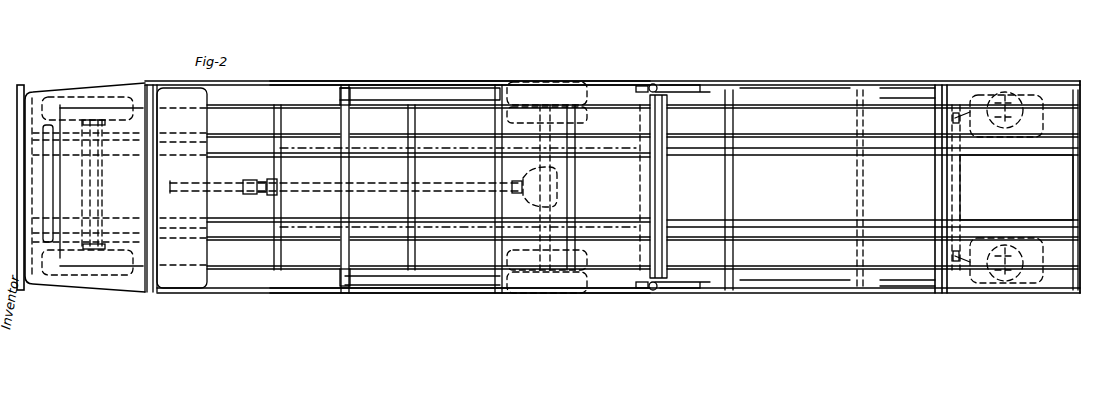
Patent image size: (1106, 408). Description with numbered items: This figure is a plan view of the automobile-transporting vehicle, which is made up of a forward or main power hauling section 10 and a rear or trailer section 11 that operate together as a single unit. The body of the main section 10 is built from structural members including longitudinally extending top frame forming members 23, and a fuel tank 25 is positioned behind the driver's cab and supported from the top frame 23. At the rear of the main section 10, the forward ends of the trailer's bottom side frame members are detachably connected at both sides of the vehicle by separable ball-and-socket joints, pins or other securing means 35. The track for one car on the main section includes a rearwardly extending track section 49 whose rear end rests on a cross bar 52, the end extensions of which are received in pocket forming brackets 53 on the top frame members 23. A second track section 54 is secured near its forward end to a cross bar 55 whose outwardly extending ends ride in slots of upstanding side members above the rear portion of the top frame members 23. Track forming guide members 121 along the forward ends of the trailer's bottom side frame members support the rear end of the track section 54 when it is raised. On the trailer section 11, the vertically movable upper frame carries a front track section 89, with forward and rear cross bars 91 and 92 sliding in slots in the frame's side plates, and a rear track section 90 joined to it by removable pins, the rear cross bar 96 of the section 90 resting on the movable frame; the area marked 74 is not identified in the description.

The main power hauling section 10 is at (140, 74).
The trailer section 11 is at (926, 85).
The top frame forming member 23 is at (331, 85).
The fuel tank 25 is at (175, 278).
The securing means 35 is at (655, 85).
The rear track section 49 is at (285, 115).
The cross bar 52 is at (355, 100).
The pocket forming bracket 53 is at (341, 100).
The track section 54 is at (476, 115).
The cross bar 55 is at (410, 167).
The rear compartment 74 is at (1033, 195).
The front track section 89 is at (822, 112).
The rear track section 90 is at (1040, 110).
The forward cross bar 91 is at (725, 183).
The rear cross bar 92 is at (940, 186).
The rear cross bar 96 is at (1073, 170).
The track forming guide member 121 is at (673, 92).